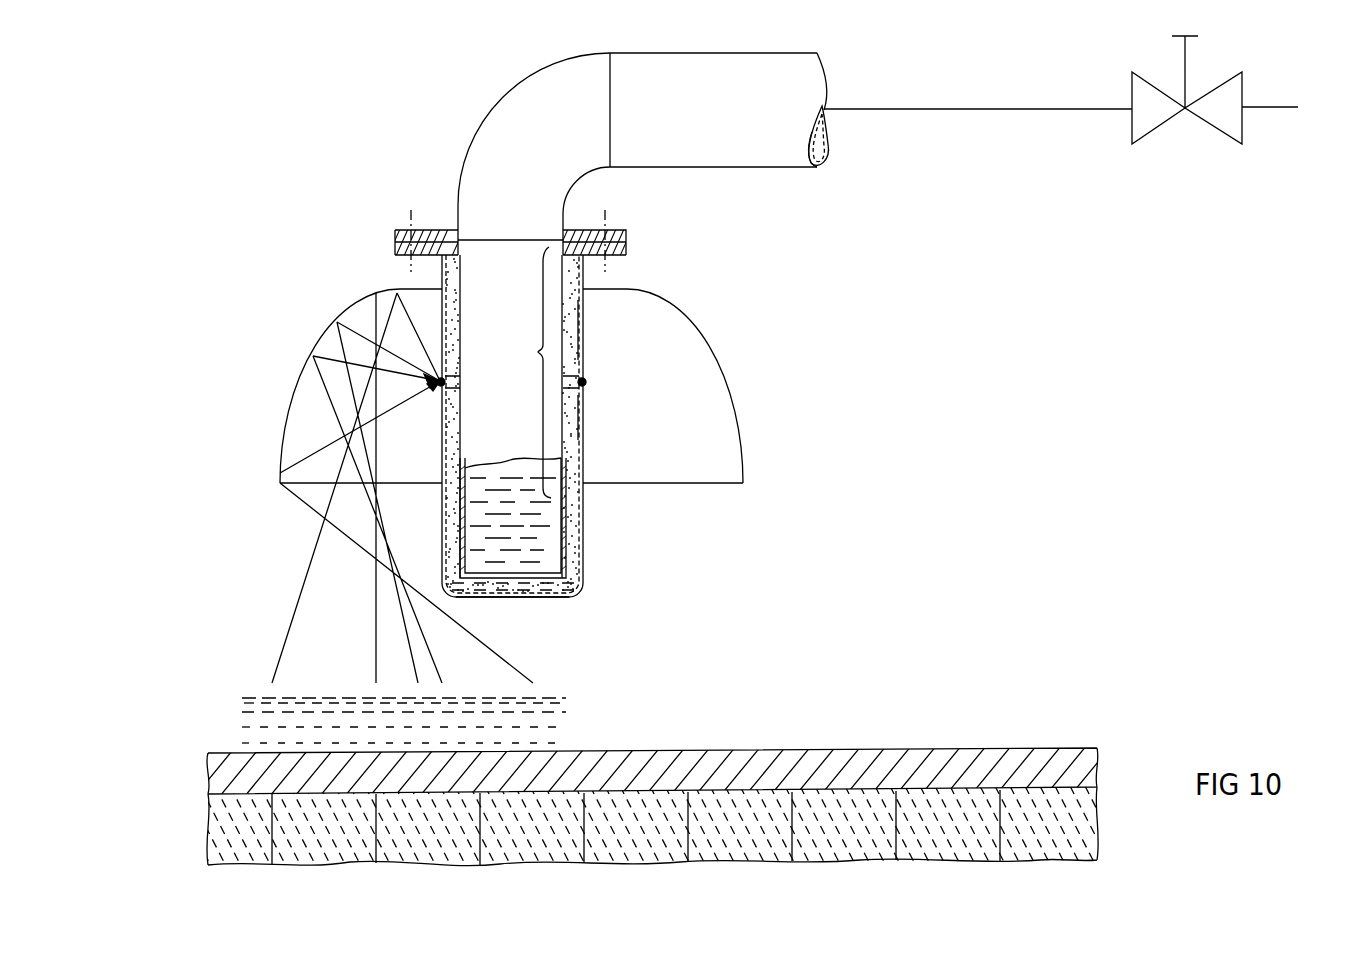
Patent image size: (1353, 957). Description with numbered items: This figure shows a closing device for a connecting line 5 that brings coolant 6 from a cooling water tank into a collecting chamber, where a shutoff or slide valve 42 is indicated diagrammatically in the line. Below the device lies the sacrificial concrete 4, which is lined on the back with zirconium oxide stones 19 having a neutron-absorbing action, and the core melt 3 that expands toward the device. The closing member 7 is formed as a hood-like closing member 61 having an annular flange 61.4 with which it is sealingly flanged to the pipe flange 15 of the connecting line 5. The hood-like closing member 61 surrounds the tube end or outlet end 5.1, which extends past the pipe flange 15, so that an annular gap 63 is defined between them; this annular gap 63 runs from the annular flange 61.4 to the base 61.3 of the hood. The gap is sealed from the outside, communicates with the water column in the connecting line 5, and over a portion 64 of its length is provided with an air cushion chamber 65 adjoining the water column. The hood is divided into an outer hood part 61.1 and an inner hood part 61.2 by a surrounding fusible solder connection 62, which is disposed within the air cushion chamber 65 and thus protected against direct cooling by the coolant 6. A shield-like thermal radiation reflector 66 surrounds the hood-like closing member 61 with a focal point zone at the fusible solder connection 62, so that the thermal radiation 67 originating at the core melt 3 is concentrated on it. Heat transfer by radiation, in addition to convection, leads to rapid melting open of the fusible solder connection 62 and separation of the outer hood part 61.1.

The core melt 3 is at (258, 700).
The sacrificial concrete 4 is at (845, 752).
The connecting line 5 is at (731, 168).
The tube end or outlet end 5.1 is at (457, 205).
The coolant 6 is at (481, 521).
The closing member 7 is at (592, 447).
The pipe flange 15 is at (395, 231).
The zirconium oxide stones 19 is at (944, 808).
The shutoff or slide valve 42 is at (1160, 126).
The hood-like closing member 61 is at (583, 592).
The outer hood part 61.1 is at (584, 553).
The inner hood part 61.2 is at (583, 306).
The base 61.3 is at (478, 601).
The annular flange 61.4 is at (395, 249).
The fusible solder connection 62 is at (584, 381).
The annular gap 63 is at (578, 416).
The portion of the annular gap length 64 is at (530, 372).
The air cushion chamber 65 is at (578, 339).
The thermal radiation reflector 66 is at (285, 416).
The thermal radiation 67 is at (352, 627).